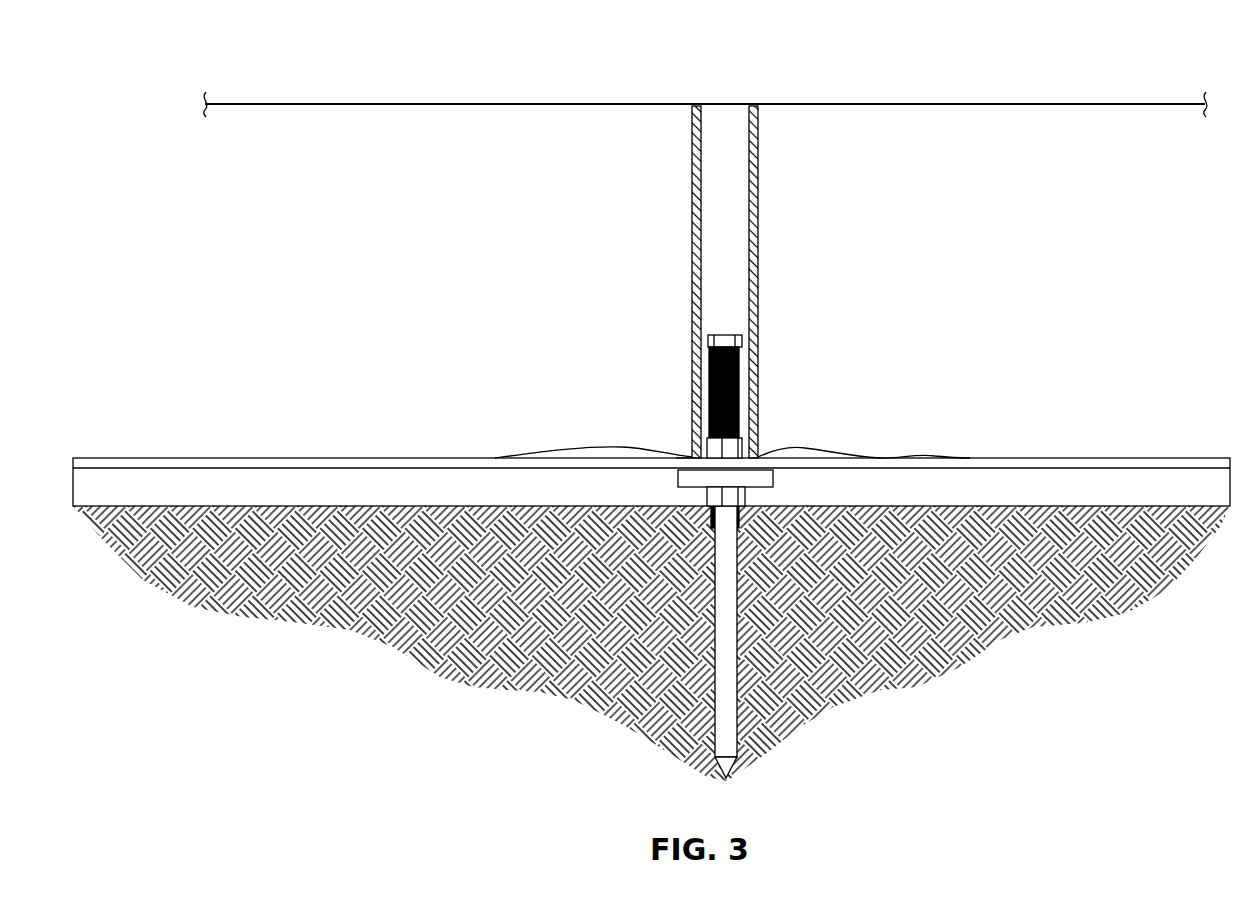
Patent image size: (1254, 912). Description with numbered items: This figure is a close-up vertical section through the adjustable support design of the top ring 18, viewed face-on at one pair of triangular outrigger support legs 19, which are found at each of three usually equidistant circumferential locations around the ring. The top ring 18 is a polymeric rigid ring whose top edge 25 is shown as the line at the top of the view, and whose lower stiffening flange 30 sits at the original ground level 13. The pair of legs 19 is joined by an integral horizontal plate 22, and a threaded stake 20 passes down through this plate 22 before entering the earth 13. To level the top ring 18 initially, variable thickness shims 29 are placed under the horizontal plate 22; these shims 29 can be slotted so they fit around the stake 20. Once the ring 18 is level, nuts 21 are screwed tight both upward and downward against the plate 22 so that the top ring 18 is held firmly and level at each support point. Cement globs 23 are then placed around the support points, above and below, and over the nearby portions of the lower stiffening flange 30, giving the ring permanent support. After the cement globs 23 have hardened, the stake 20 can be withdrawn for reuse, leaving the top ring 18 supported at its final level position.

The ground 13 is at (146, 505).
The top ring 18 is at (710, 282).
The outrigger support legs 19 is at (694, 250).
The threaded stake 20 is at (709, 374).
The nuts 21 is at (749, 440).
The horizontal plate 22 is at (681, 457).
The cement globs 23 is at (920, 457).
The top edge 25 is at (341, 96).
The shims 29 is at (678, 477).
The stiffening flanges 30 is at (324, 505).